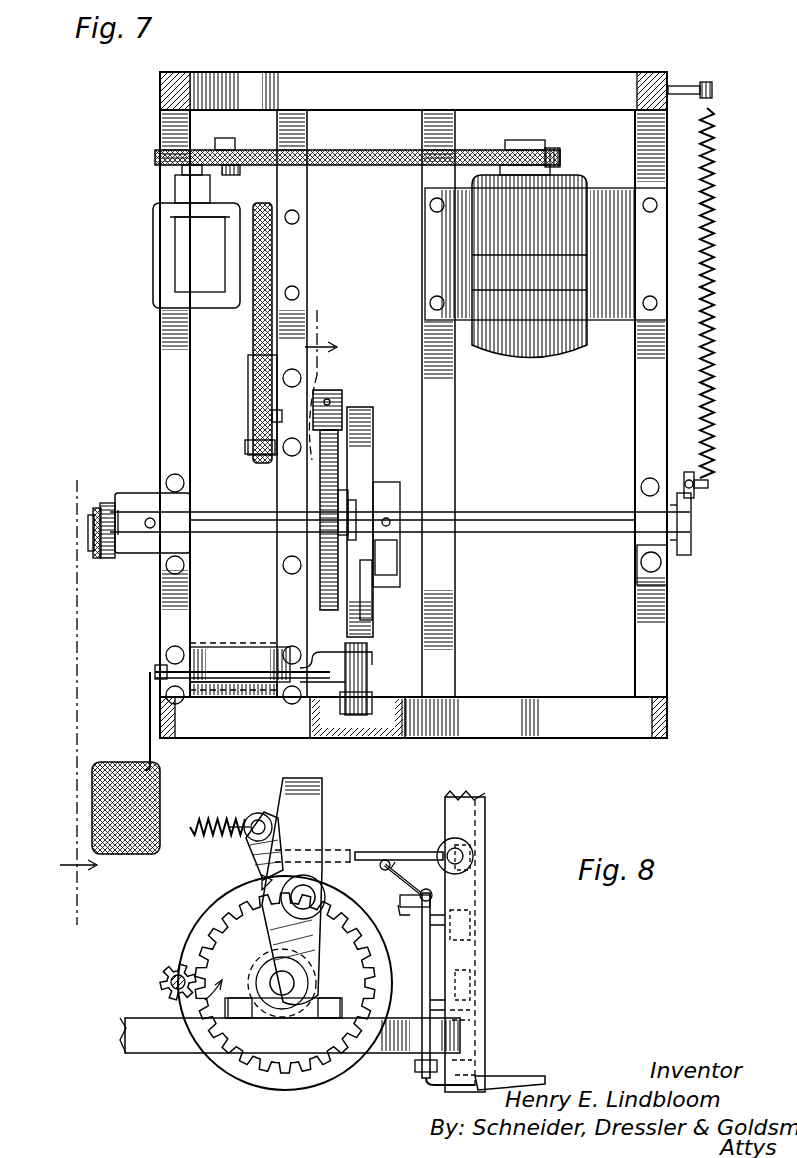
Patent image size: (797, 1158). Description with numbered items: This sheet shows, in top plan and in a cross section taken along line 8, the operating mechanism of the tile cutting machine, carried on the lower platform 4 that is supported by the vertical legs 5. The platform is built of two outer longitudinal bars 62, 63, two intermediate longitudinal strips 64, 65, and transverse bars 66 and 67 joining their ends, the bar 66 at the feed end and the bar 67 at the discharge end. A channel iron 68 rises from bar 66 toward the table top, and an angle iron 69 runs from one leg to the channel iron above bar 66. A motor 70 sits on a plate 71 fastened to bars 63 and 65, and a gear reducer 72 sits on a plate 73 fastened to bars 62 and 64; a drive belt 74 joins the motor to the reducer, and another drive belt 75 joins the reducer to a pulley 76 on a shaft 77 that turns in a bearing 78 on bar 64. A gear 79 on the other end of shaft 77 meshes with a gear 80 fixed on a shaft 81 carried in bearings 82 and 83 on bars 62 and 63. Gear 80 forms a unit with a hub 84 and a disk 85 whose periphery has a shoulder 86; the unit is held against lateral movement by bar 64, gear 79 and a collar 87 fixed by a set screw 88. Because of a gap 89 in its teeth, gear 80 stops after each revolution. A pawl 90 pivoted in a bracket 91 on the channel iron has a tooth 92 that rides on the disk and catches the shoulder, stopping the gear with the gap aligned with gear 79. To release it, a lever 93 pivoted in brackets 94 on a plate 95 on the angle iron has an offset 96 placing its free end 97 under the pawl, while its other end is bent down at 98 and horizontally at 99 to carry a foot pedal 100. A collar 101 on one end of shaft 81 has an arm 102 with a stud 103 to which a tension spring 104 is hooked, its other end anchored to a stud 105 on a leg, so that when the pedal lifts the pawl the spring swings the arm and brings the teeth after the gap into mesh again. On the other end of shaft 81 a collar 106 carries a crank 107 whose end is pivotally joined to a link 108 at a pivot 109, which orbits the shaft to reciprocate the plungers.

In FIG. 7, the lower platform 4 is at (581, 66).
In FIG. 7, the vertical legs 5 is at (160, 86).
In FIG. 8, the vertical legs 5 is at (485, 990).
In FIG. 7, the section line 8— 8 is at (198, 617).
In FIG. 7, the outer longitudinal bar 62 is at (160, 372).
In FIG. 8, the outer longitudinal bar 62 is at (125, 1036).
In FIG. 7, the outer longitudinal bar 63 is at (635, 422).
In FIG. 7, the intermediate longitudinal strip 64 is at (280, 553).
In FIG. 7, the intermediate longitudinal strip 65 is at (440, 386).
In FIG. 7, the transverse bar 66 is at (545, 738).
In FIG. 7, the transverse bar 67 is at (392, 85).
In FIG. 7, the channel iron 68 is at (372, 730).
In FIG. 7, the angle iron 69 is at (224, 738).
In FIG. 8, the angle iron 69 is at (488, 935).
In FIG. 7, the motor 70 is at (575, 250).
In FIG. 7, the plate 71 is at (608, 320).
In FIG. 7, the gear reducer 72 is at (190, 246).
In FIG. 7, the plate 73 is at (255, 215).
In FIG. 7, the drive belt 74 is at (354, 166).
In FIG. 7, the drive belt 75 is at (255, 330).
In FIG. 7, the pulley 76 is at (256, 420).
In FIG. 7, the shaft 77 is at (322, 394).
In FIG. 8, the shaft 77 is at (160, 985).
In FIG. 7, the bearing 78 is at (258, 444).
In FIG. 7, the gear 79 is at (342, 400).
In FIG. 8, the gear 79 is at (150, 985).
In FIG. 7, the gear 80 is at (322, 574).
In FIG. 8, the gear 80 is at (248, 1065).
In FIG. 7, the shaft 81 is at (500, 533).
In FIG. 8, the shaft 81 is at (290, 981).
In FIG. 7, the bearing 82 is at (160, 492).
In FIG. 8, the bearing 82 is at (242, 1020).
In FIG. 7, the bearing 83 is at (637, 545).
In FIG. 7, the hub 84 is at (320, 486).
In FIG. 7, the disk 85 is at (366, 453).
In FIG. 8, the disk 85 is at (258, 1085).
In FIG. 7, the shoulder 86 is at (352, 500).
In FIG. 8, the shoulder 86 is at (298, 860).
In FIG. 7, the collar 87 is at (380, 566).
In FIG. 7, the set screw 88 is at (388, 490).
In FIG. 8, the gap 89 is at (195, 975).
In FIG. 7, the pawl 90 is at (365, 603).
In FIG. 8, the pawl 90 is at (371, 852).
In FIG. 7, the bracket 91 is at (345, 738).
In FIG. 8, the bracket 91 is at (490, 858).
In FIG. 8, the tooth 92 is at (262, 878).
In FIG. 7, the lever 93 is at (244, 662).
In FIG. 8, the lever 93 is at (480, 965).
In FIG. 7, the brackets 94 is at (162, 667).
In FIG. 8, the brackets 94 is at (398, 912).
In FIG. 7, the plate 95 is at (202, 648).
In FIG. 8, the plate 95 is at (416, 979).
In FIG. 7, the offset 96 is at (322, 682).
In FIG. 8, the offset 96 is at (408, 882).
In FIG. 7, the free end 97 is at (373, 660).
In FIG. 8, the free end 97 is at (400, 855).
In FIG. 8, the downwardly bent portion 98 is at (415, 1066).
In FIG. 7, the horizontal portion 99 is at (148, 706).
In FIG. 8, the horizontal portion 99 is at (430, 1085).
In FIG. 7, the foot pedal 100 is at (92, 790).
In FIG. 8, the foot pedal 100 is at (518, 1076).
In FIG. 7, the collar 101 is at (690, 556).
In FIG. 7, the arm 102 is at (689, 472).
In FIG. 8, the arm 102 is at (250, 855).
In FIG. 7, the stud 103 is at (700, 492).
In FIG. 8, the stud 103 is at (258, 820).
In FIG. 7, the tension spring 104 is at (716, 448).
In FIG. 8, the tension spring 104 is at (217, 820).
In FIG. 7, the stud 105 is at (690, 88).
In FIG. 7, the collar 106 is at (135, 495).
In FIG. 8, the collar 106 is at (308, 793).
In FIG. 7, the crank 107 is at (118, 560).
In FIG. 8, the crank 107 is at (285, 935).
In FIG. 7, the link 108 is at (96, 557).
In FIG. 7, the pivot 109 is at (90, 532).
In FIG. 8, the pivot 109 is at (314, 892).